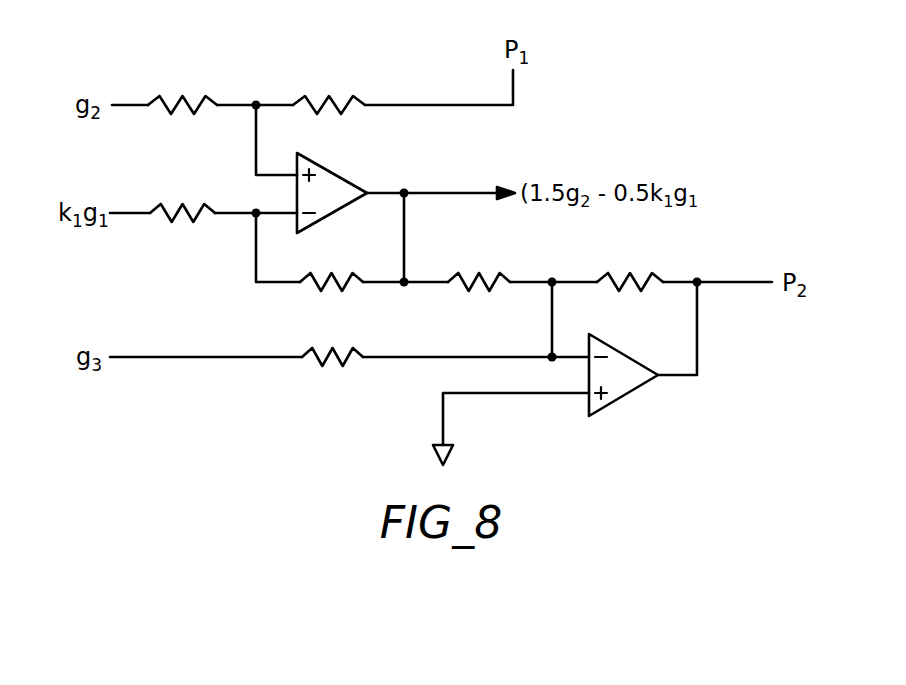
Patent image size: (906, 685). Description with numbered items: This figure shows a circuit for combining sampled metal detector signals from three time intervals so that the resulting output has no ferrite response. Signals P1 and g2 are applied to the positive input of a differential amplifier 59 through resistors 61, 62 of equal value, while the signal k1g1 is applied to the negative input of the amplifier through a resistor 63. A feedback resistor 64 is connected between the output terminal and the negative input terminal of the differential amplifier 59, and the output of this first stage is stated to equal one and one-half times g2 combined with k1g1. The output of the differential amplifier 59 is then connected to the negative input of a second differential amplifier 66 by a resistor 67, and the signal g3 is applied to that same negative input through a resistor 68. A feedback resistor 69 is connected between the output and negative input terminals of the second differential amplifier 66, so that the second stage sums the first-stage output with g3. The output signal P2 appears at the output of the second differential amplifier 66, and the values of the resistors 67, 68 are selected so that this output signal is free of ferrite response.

The differential amplifier 59 is at (345, 177).
The resistor 61 is at (190, 118).
The resistor 62 is at (343, 97).
The resistor 63 is at (186, 222).
The feedback resistor 64 is at (353, 285).
The second differential amplifier 66 is at (612, 403).
The resistor 67 is at (493, 270).
The resistor 68 is at (345, 364).
The feedback resistor 69 is at (635, 290).